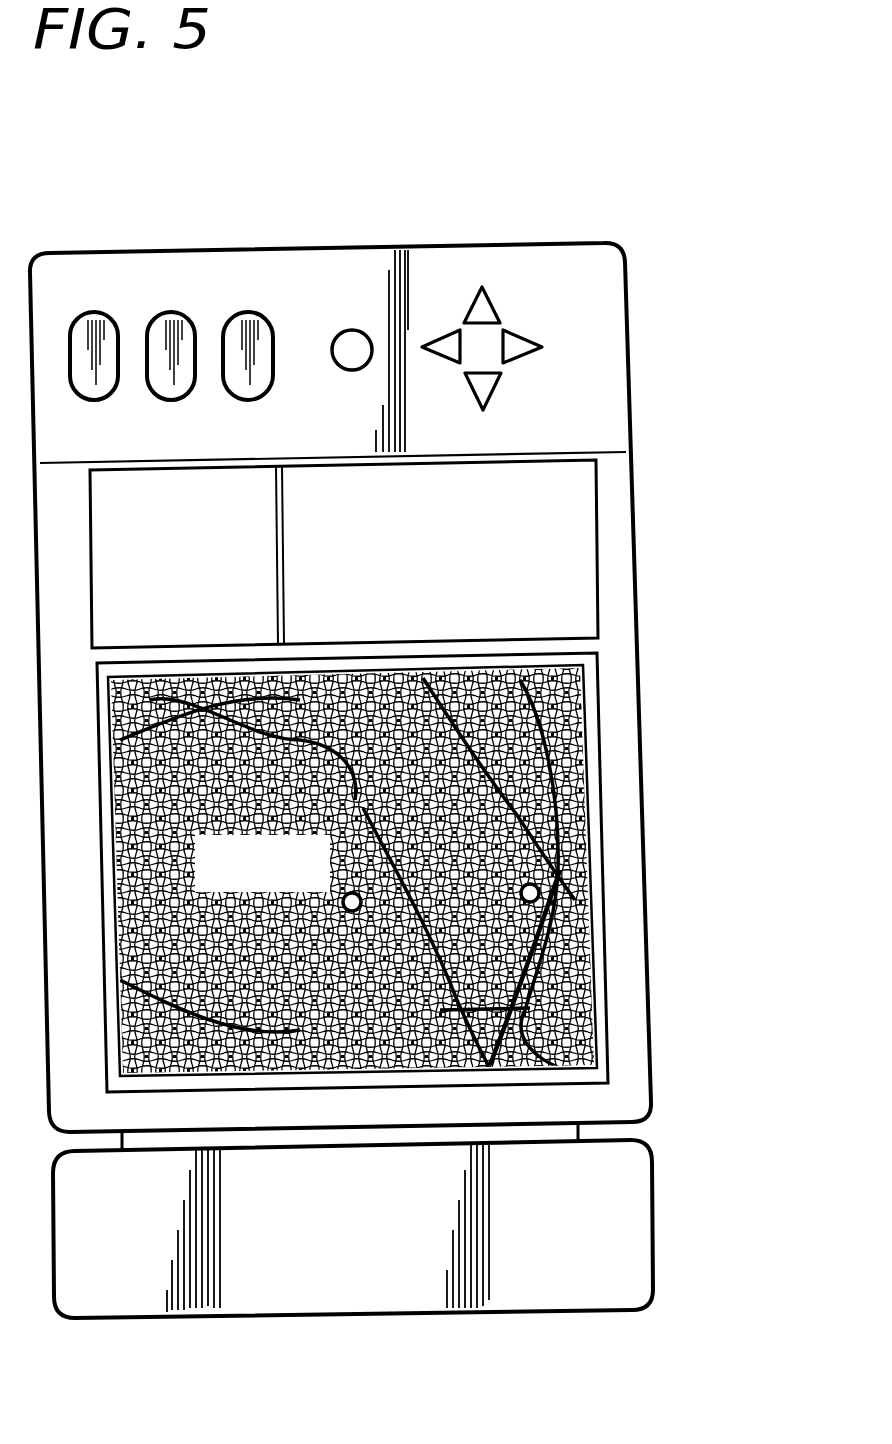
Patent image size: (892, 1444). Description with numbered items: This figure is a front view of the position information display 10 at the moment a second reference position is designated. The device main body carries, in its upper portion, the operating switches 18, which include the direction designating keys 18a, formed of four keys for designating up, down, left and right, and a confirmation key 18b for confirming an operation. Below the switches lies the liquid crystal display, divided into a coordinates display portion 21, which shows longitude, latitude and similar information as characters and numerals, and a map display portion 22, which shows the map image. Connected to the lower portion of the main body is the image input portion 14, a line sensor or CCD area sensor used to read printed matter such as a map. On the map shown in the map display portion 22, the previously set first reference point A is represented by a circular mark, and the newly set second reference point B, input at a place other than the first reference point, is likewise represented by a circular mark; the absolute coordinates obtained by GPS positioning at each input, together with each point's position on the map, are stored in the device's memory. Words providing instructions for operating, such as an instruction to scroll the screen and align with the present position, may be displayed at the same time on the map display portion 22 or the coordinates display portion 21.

The position information display 10 is at (565, 243).
The image input portion 14 is at (655, 1221).
The operating switches 18 is at (248, 316).
The direction designating keys 18a is at (478, 288).
The confirmation key 18b is at (352, 330).
The coordinates display portion 21 is at (598, 551).
The map display portion 22 is at (619, 812).
The first reference point A is at (583, 885).
The second reference point B is at (583, 1032).